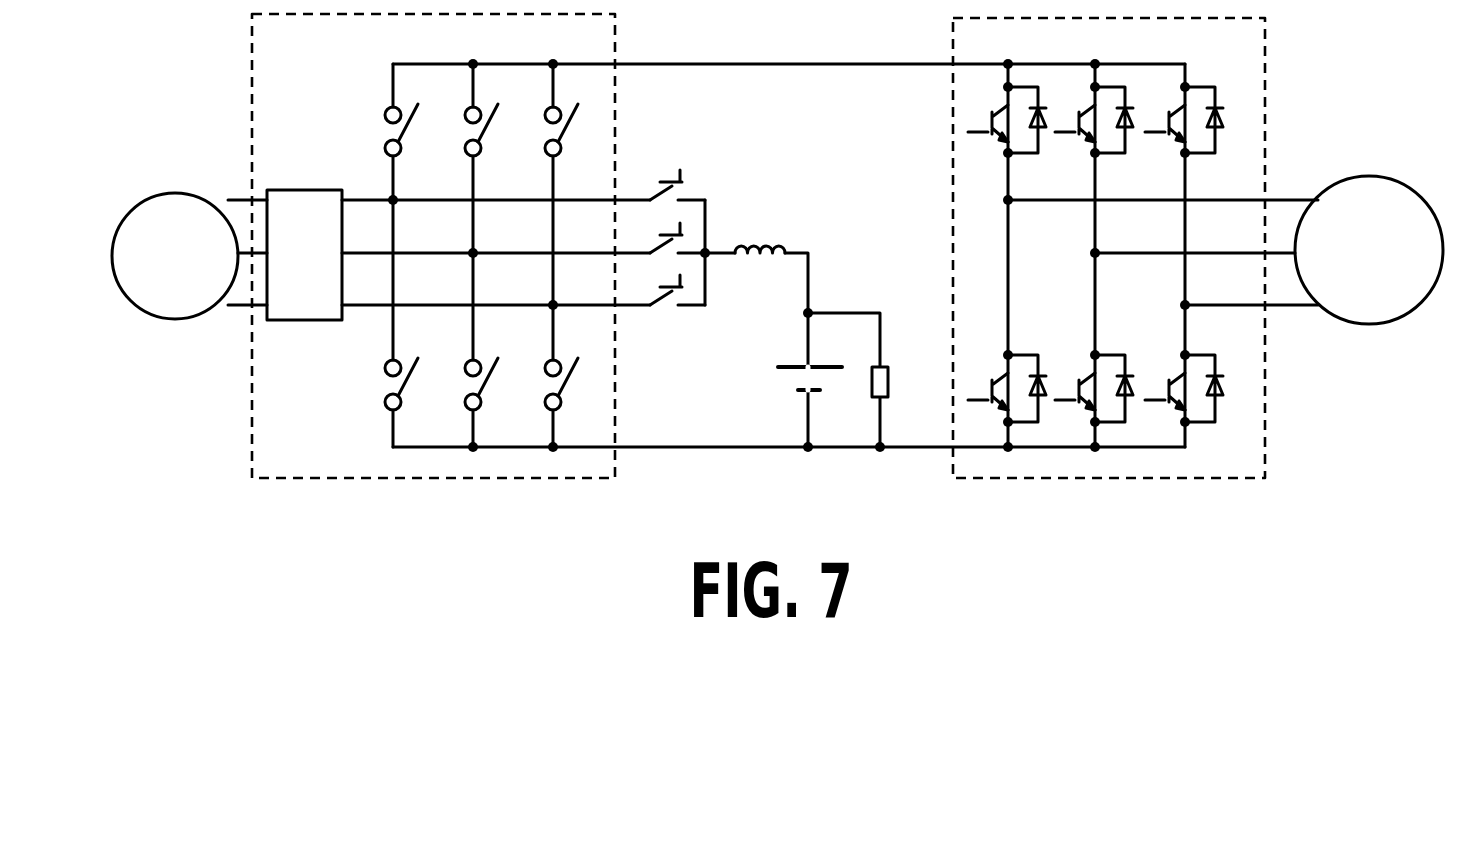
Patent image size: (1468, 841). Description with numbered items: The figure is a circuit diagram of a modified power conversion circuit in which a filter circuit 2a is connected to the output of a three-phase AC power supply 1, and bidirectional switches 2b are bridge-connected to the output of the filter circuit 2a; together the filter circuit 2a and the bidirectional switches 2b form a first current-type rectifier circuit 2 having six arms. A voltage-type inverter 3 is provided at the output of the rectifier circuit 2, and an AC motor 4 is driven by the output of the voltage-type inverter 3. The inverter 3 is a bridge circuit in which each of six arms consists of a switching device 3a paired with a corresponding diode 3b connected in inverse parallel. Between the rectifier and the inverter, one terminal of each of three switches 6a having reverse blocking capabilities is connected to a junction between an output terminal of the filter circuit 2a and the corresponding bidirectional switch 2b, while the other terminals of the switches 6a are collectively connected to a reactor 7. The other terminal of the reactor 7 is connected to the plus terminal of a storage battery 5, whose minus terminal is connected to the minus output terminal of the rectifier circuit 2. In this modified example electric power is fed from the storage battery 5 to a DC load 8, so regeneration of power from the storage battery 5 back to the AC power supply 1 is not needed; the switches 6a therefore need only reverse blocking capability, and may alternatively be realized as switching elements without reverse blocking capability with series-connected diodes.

The three-phase AC power supply 1 is at (175, 256).
The first current-type rectifier circuit 2 is at (433, 246).
The filter circuit 2a is at (304, 255).
The bidirectional switches 2b is at (495, 242).
The voltage-type inverter 3 is at (1109, 248).
The switching devices 3a is at (1076, 238).
The diodes 3b is at (1131, 254).
The AC motor 4 is at (1369, 250).
The storage battery 5 is at (805, 356).
The switches having reverse blocking capabilities 6a is at (661, 232).
The reactor 7 is at (760, 227).
The DC load 8 is at (894, 373).